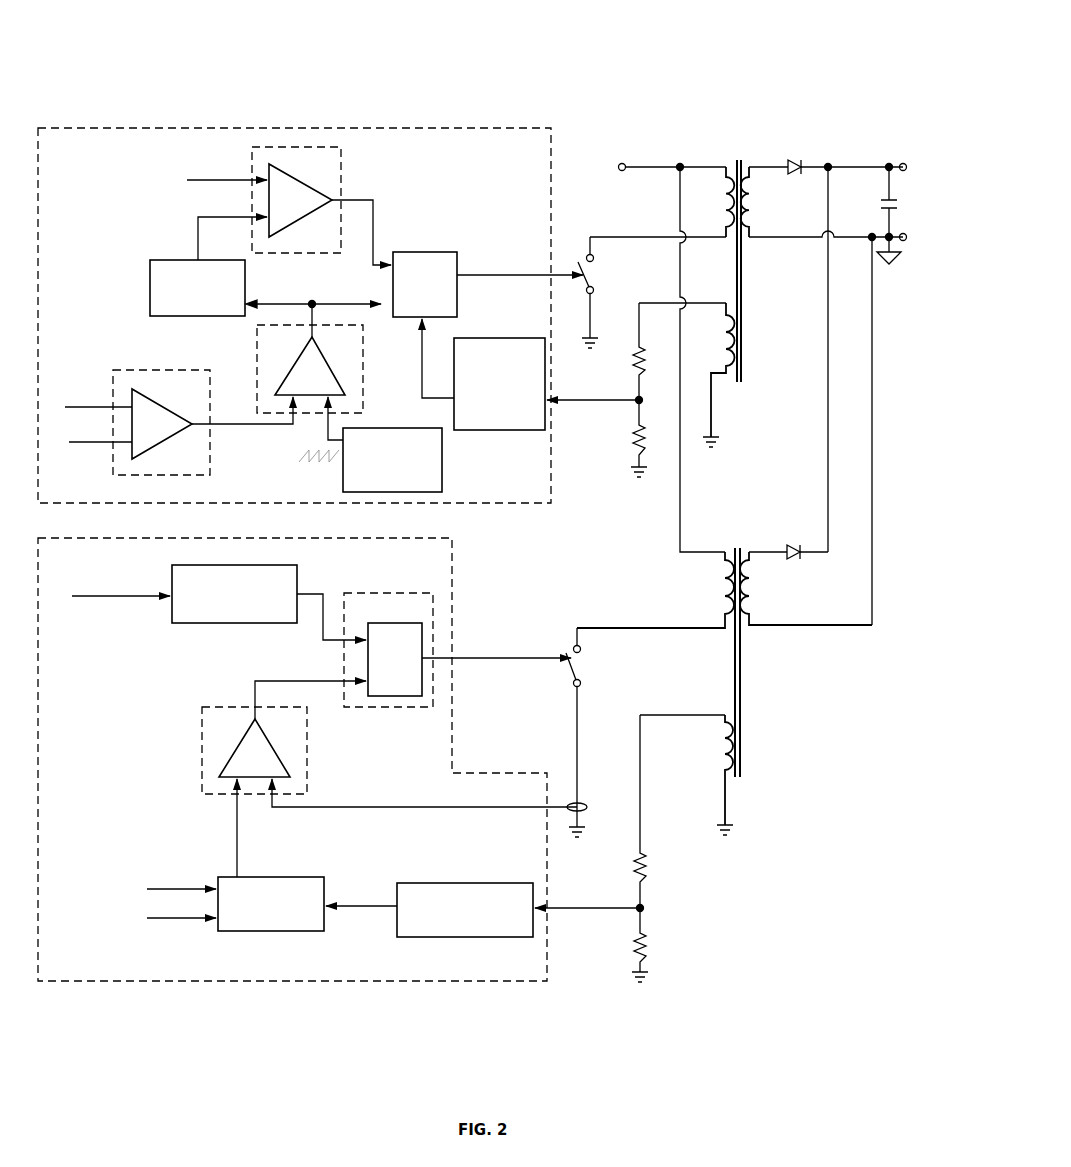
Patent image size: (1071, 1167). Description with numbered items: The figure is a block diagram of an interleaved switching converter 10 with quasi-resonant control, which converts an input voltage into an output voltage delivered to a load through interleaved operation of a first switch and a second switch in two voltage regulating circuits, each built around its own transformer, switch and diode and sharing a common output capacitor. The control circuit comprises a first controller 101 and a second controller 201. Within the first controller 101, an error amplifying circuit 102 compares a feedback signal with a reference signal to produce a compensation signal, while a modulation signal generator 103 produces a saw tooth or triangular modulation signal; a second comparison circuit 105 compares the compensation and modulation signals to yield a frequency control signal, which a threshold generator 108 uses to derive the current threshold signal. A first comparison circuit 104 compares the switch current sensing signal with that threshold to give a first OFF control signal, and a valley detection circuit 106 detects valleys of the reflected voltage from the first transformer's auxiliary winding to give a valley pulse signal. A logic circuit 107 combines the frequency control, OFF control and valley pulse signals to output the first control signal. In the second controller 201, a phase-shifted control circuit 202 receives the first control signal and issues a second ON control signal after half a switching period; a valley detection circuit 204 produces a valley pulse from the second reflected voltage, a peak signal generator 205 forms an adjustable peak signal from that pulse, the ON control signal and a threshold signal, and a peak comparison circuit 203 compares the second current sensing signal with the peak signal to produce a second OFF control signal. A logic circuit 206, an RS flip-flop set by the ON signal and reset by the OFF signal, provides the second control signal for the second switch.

The interleaved switching converter 10 is at (730, 48).
The first controller 101 is at (205, 128).
The error amplifying circuit 102 is at (142, 358).
The modulation signal generator 103 is at (380, 428).
The first comparison circuit 104 is at (341, 176).
The second comparison circuit 105 is at (257, 350).
The valley detection circuit 106 is at (527, 430).
The logic circuit 107 is at (405, 252).
The threshold generator 108 is at (150, 285).
The second controller 201 is at (145, 538).
The phase-shifted control circuit 202 is at (178, 623).
The peak comparison circuit 203 is at (202, 755).
The valley detection circuit 204 is at (410, 937).
The peak signal generator 205 is at (325, 877).
The logic circuit 206 is at (372, 593).